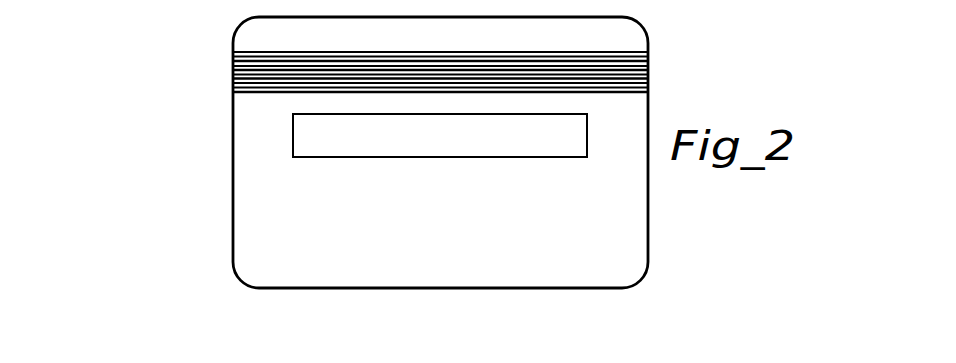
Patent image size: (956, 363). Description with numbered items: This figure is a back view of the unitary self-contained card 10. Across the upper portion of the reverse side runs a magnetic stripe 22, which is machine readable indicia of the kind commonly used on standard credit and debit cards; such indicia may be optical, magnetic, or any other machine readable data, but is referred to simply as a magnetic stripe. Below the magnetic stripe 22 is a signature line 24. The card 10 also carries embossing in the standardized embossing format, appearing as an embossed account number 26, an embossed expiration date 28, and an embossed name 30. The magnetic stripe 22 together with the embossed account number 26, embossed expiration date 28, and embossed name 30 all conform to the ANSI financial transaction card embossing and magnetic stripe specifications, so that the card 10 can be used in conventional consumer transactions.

The card 10 is at (650, 107).
The magnetic stripe 22 is at (240, 72).
The signature line 24 is at (307, 143).
The embossed account number 26 is at (563, 180).
The embossed expiration date 28 is at (510, 237).
The embossed name 30 is at (293, 263).